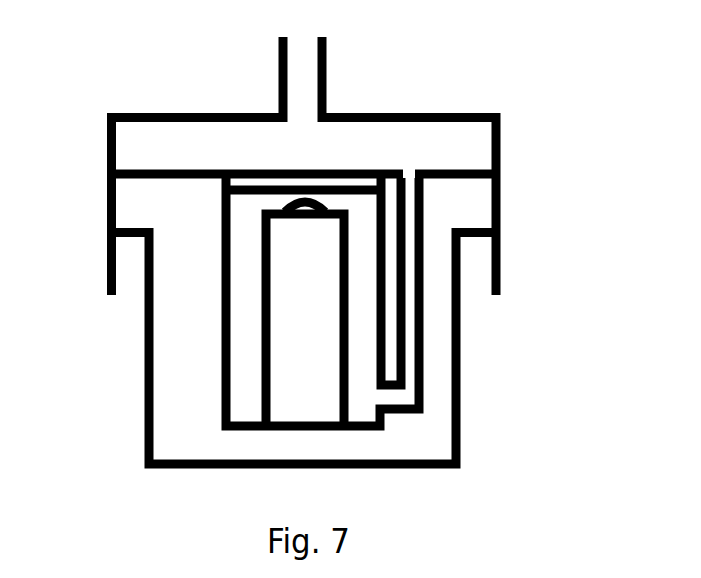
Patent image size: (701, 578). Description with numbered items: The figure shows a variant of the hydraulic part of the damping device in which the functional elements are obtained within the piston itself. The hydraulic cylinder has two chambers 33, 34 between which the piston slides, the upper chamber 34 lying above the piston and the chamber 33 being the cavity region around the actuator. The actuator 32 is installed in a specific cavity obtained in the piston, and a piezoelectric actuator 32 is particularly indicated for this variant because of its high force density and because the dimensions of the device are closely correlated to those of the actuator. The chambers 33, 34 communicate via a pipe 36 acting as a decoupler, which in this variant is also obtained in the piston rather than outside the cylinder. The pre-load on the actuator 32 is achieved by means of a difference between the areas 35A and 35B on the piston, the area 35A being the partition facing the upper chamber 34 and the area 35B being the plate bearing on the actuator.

The actuator 32 is at (316, 328).
The chamber 33 is at (247, 370).
The chamber 34 is at (368, 158).
The area on the piston 35A is at (185, 168).
The area on the piston 35B is at (252, 200).
The pipe 36 is at (418, 312).